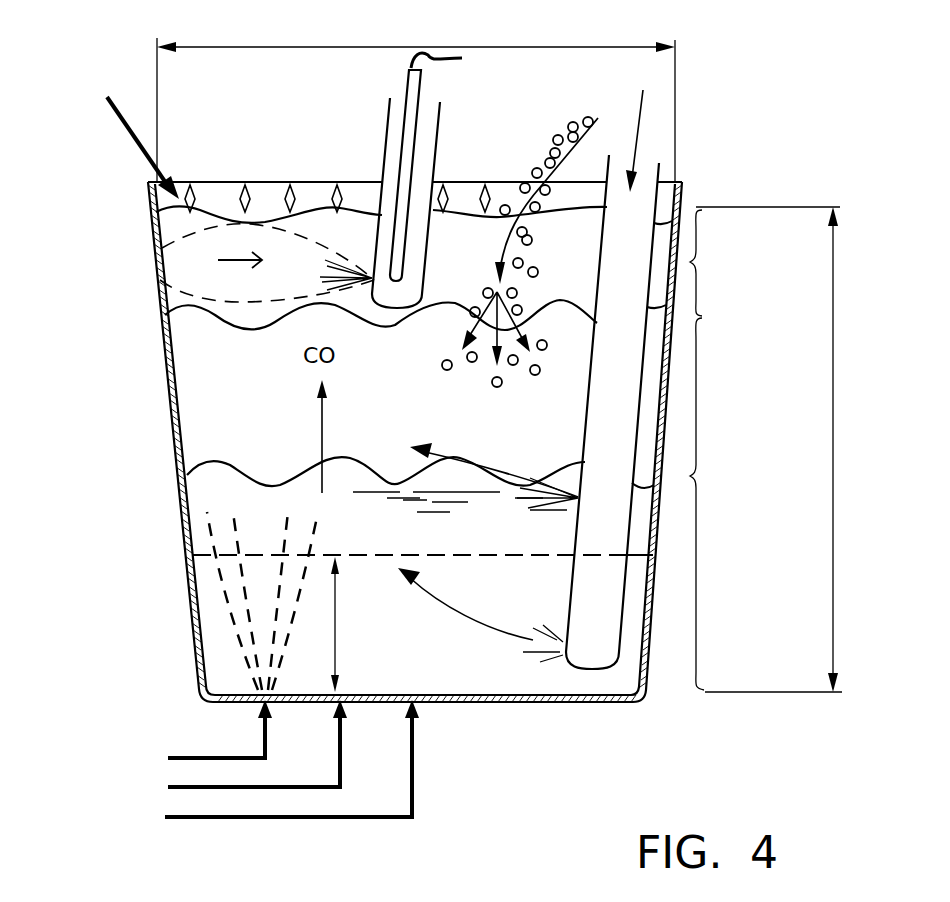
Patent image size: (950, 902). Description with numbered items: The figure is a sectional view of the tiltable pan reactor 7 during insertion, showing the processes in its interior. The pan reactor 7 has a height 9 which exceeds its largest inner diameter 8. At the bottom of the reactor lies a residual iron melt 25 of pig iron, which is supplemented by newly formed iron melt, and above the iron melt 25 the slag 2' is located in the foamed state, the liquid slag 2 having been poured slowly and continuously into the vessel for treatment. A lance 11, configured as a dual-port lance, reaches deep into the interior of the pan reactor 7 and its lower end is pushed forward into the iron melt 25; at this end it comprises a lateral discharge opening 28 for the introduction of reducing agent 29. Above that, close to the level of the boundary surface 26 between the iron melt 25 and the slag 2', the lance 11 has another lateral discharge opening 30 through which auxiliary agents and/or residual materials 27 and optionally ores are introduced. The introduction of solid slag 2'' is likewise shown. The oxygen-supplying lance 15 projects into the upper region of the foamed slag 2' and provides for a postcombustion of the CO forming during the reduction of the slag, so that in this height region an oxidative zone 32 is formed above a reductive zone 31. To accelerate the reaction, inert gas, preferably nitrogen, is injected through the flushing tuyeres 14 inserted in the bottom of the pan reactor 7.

The slag 2 is at (122, 148).
The foamed slag 2' is at (312, 323).
The solid slag 2'' is at (520, 241).
The tiltable pan reactor 7 is at (178, 600).
The largest inner diameter 8 is at (416, 97).
The height 9 is at (769, 449).
The lance 11 is at (660, 175).
The flushing tuyeres 14 is at (410, 747).
The oxygen-supplying lance 15 is at (385, 163).
The iron melt 25 is at (321, 624).
The boundary surface 26 is at (243, 463).
The auxiliary agents and/or residual materials 27 is at (463, 467).
The lateral discharge opening 28 is at (563, 655).
The reducing agent 29 is at (483, 602).
The lateral discharge opening 30 is at (577, 508).
The reductive zone 31 is at (717, 504).
The oxidative zone 32 is at (715, 263).